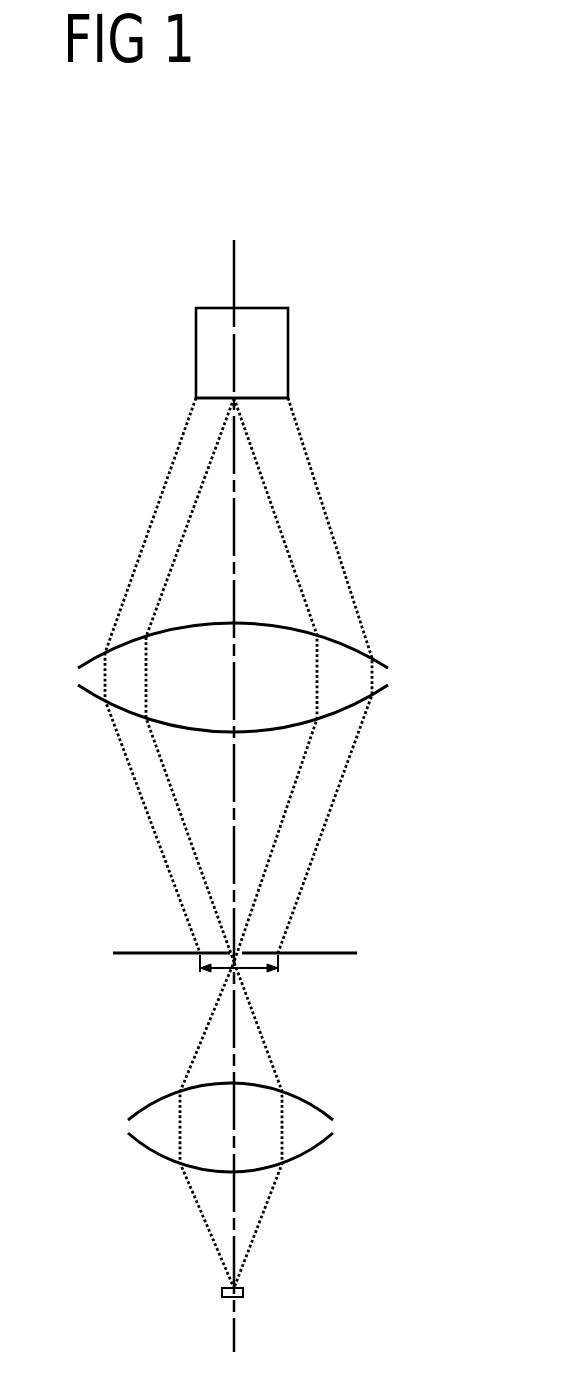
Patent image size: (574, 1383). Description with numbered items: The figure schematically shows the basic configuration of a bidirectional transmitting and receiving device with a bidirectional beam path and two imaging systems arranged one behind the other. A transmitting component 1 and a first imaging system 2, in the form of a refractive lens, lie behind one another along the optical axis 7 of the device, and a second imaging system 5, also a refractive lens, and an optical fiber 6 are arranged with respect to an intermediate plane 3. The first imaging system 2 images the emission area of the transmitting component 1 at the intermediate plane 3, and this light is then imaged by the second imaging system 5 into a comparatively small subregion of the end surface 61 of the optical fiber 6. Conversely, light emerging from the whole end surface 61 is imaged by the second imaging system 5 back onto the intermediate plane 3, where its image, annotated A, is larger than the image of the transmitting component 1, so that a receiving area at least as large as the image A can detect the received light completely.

The transmitting component 1 is at (243, 1293).
The first imaging system 2 is at (298, 1138).
The intermediate plane 3 is at (271, 1002).
The image of the end surface A is at (243, 967).
The second imaging system 5 is at (348, 670).
The optical fiber 6 is at (277, 350).
The end surface 61 is at (268, 400).
The optical axis 7 is at (238, 278).